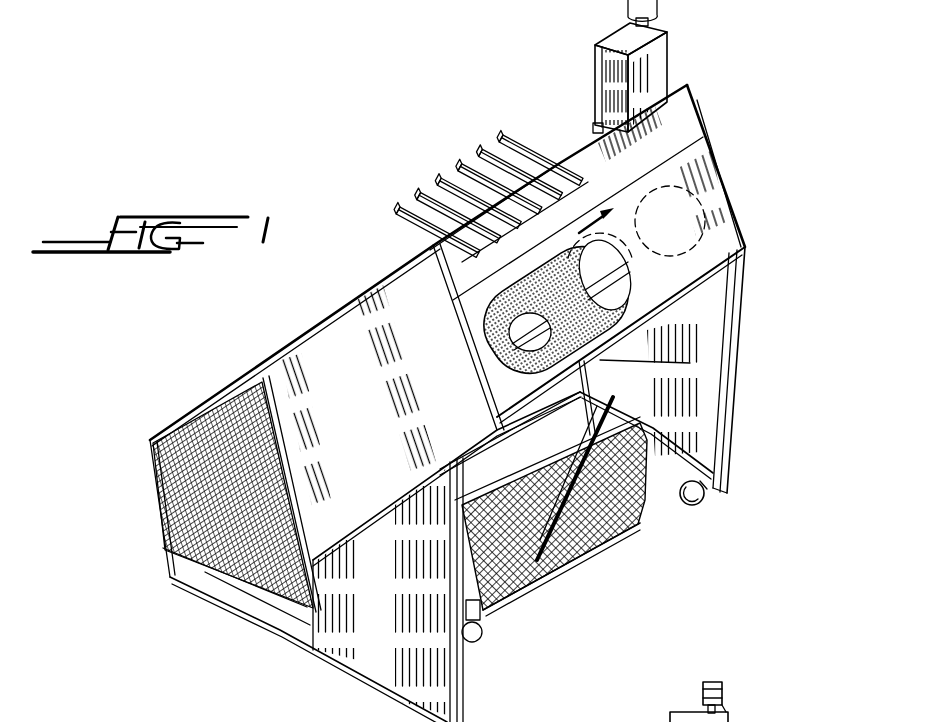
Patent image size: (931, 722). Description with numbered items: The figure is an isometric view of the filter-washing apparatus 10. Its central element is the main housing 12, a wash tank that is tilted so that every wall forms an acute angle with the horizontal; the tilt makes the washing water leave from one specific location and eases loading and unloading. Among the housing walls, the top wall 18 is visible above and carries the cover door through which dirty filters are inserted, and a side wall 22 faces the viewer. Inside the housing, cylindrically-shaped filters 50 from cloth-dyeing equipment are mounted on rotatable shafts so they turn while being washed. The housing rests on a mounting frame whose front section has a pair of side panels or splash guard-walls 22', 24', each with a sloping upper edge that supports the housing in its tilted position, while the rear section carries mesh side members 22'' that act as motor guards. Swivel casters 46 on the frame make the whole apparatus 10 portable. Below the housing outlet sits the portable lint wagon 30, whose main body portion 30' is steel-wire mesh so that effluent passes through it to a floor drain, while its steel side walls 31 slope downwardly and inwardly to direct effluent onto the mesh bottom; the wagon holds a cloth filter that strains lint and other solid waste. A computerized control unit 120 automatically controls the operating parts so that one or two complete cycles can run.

The apparatus 10 is at (328, 178).
The main housing 12 is at (338, 352).
The top wall 18 is at (708, 166).
The side wall 22 is at (358, 398).
The side panel or splash guard-wall 22' is at (382, 591).
The side member or mesh 22'' is at (191, 495).
The side panel or splash guard-wall 24' is at (696, 370).
The portable cart or wagon 30 is at (543, 501).
The main body portion 30' is at (561, 589).
The side walls 31 is at (640, 490).
The swivel casters 46 is at (701, 505).
The cylindrically-shaped filters 50 is at (690, 363).
The computerized control unit 120 is at (603, 33).